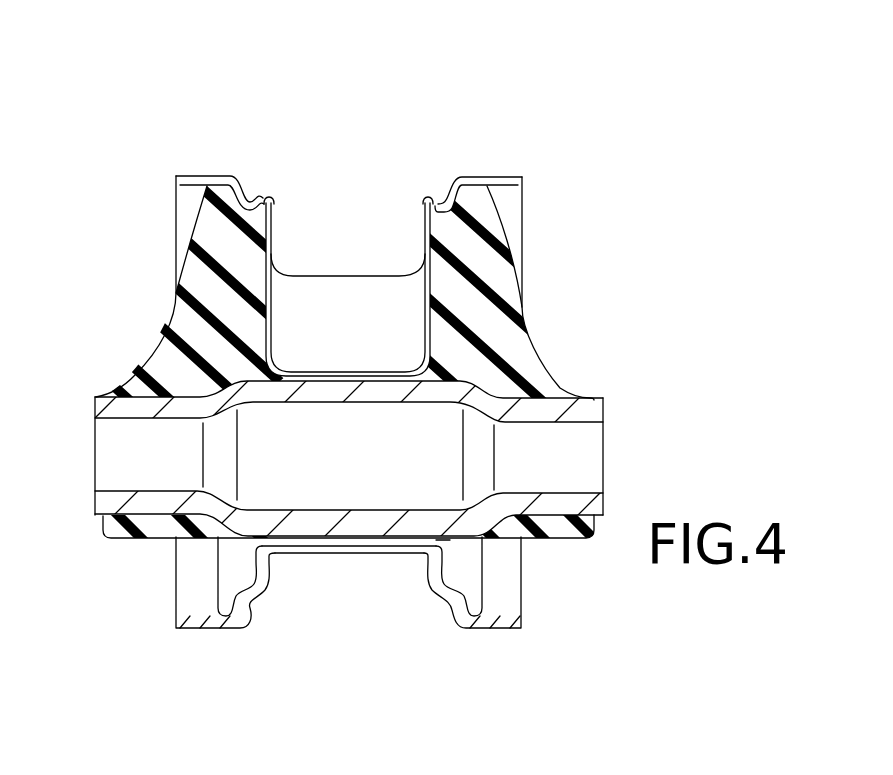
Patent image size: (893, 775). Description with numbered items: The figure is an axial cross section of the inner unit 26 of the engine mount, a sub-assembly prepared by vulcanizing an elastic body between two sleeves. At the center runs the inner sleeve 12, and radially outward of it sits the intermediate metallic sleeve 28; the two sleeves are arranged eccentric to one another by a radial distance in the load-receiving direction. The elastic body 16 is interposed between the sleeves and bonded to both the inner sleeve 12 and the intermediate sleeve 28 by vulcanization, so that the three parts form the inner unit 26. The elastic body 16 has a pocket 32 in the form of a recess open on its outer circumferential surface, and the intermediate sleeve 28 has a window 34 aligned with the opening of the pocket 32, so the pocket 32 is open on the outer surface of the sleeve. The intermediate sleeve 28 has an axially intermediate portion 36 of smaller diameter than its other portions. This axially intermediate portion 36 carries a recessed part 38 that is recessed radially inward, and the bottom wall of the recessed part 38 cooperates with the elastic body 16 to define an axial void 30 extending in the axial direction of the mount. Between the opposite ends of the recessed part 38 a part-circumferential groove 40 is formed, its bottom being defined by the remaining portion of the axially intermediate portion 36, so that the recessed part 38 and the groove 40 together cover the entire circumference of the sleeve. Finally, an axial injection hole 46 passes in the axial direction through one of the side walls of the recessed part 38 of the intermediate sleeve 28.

The inner sleeve 12 is at (548, 410).
The elastic body 16 is at (202, 273).
The inner unit 26 is at (146, 114).
The intermediate metallic sleeve 28 is at (507, 168).
The axial void 30 is at (444, 542).
The pocket 32 is at (428, 292).
The window 34 is at (428, 207).
The axially intermediate portion 36 is at (440, 602).
The recessed part 38 is at (348, 557).
The part-circumferential groove 40 is at (256, 182).
The axial injection hole 46 is at (236, 568).